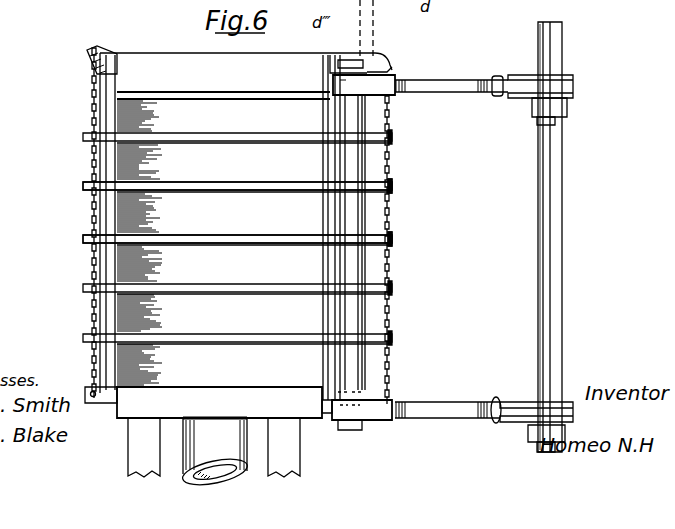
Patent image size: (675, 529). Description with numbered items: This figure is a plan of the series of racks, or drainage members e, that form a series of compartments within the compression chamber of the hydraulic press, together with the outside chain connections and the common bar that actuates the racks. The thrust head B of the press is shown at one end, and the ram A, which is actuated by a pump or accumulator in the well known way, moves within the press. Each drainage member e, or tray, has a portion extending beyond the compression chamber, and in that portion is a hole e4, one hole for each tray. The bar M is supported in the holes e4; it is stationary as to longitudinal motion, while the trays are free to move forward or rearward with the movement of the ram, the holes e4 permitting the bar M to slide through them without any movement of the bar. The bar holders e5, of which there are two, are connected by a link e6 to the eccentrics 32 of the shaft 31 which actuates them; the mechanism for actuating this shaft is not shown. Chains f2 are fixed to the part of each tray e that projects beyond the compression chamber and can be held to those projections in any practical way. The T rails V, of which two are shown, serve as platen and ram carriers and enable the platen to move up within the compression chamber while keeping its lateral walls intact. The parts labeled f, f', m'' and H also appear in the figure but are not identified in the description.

The thrust head B is at (239, 219).
The drainage member e is at (183, 243).
The clamping bar f is at (198, 237).
The clamping bar f' is at (264, 209).
The chain f2 is at (408, 312).
The hole e4 is at (425, 255).
The bar holder e5 is at (388, 72).
The link e6 is at (440, 82).
The chain m'' is at (263, 226).
The bar M is at (352, 118).
The shaft 31 is at (550, 258).
The eccentric 32 is at (558, 87).
The base bar H is at (203, 402).
The T rail V is at (214, 447).
The ram A is at (222, 450).